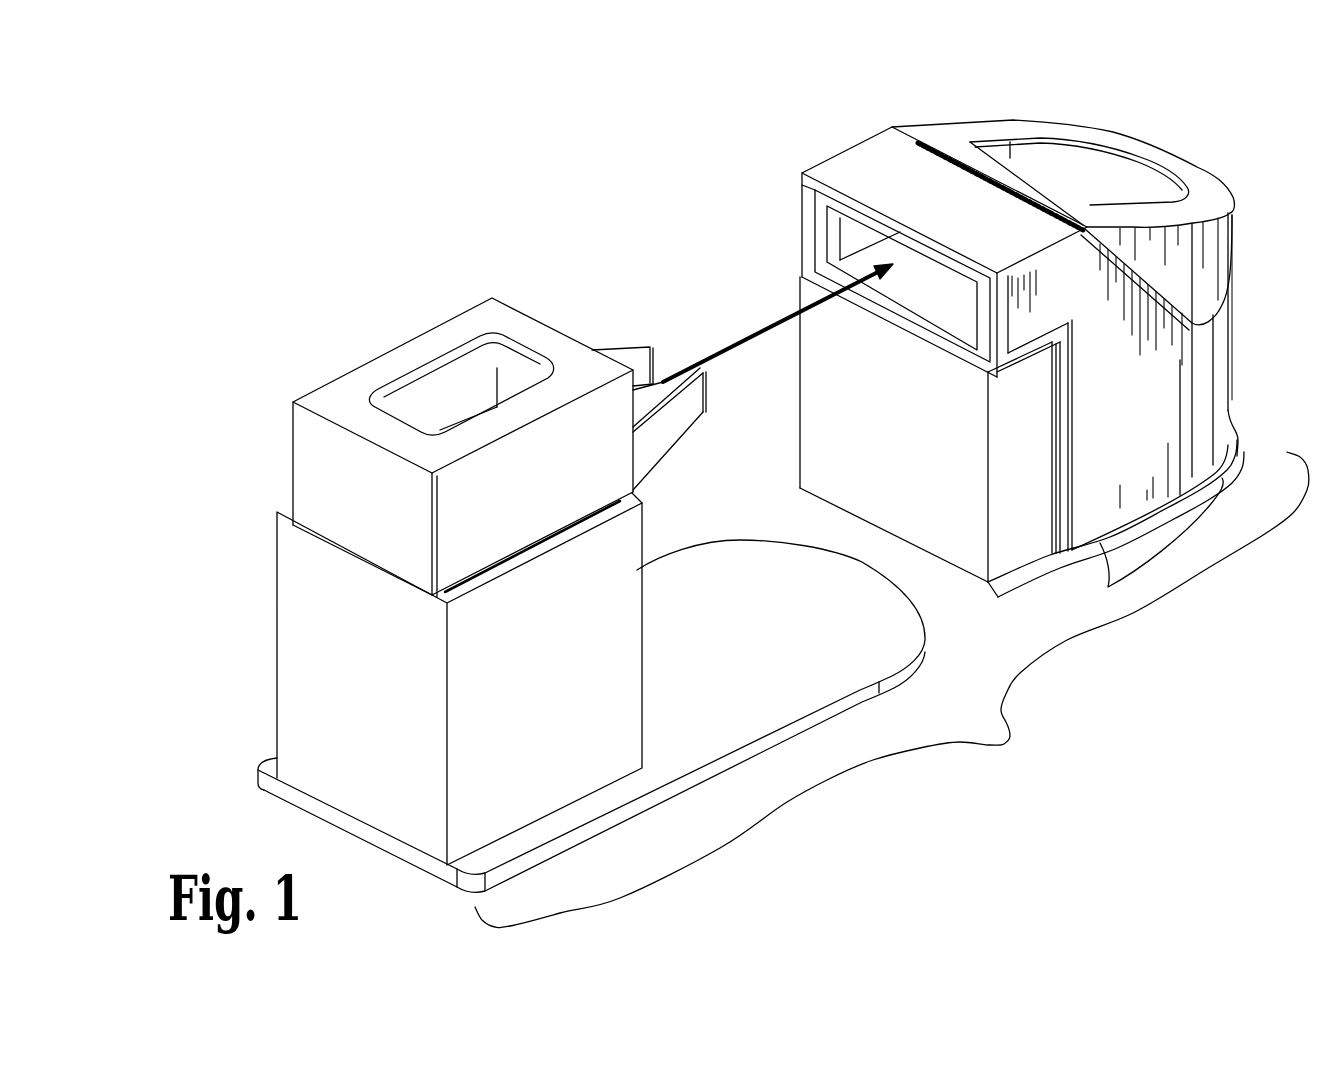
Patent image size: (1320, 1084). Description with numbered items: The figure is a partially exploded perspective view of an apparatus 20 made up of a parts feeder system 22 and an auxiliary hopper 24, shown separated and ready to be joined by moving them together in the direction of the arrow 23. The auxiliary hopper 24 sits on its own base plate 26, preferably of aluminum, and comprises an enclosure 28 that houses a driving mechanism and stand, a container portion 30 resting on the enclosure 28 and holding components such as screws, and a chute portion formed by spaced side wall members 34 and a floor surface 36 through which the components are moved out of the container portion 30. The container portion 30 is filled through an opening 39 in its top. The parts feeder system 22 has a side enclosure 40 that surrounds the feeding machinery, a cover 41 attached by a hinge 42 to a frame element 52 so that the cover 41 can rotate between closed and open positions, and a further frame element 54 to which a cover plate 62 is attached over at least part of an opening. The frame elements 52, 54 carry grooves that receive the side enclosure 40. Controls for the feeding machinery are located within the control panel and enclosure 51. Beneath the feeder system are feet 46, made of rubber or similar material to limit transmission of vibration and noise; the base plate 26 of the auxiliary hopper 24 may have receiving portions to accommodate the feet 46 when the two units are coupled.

The apparatus 20 is at (1010, 738).
The parts feeder system 22 is at (1178, 125).
The arrow 23 is at (757, 336).
The auxiliary hopper 24 is at (398, 300).
The base plate 26 is at (764, 660).
The enclosure 28 is at (372, 700).
The container portion 30 is at (352, 366).
The side wall members 34 is at (648, 370).
The floor surface 36 is at (655, 390).
The opening 39 is at (442, 368).
The side enclosure 40 is at (1134, 405).
The cover 41 is at (1200, 183).
The hinge 42 is at (937, 145).
The feet 46 is at (1105, 543).
The control panel and enclosure 51 is at (890, 421).
The frame element 52 is at (945, 205).
The frame element 54 is at (804, 224).
The cover plate 62 is at (803, 173).